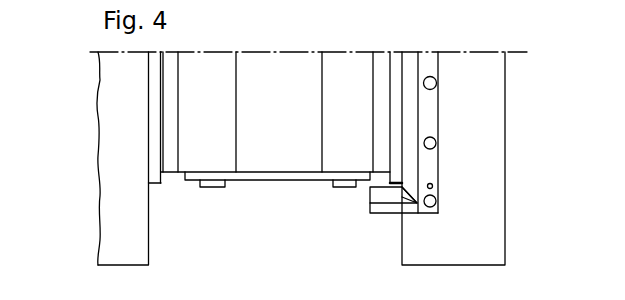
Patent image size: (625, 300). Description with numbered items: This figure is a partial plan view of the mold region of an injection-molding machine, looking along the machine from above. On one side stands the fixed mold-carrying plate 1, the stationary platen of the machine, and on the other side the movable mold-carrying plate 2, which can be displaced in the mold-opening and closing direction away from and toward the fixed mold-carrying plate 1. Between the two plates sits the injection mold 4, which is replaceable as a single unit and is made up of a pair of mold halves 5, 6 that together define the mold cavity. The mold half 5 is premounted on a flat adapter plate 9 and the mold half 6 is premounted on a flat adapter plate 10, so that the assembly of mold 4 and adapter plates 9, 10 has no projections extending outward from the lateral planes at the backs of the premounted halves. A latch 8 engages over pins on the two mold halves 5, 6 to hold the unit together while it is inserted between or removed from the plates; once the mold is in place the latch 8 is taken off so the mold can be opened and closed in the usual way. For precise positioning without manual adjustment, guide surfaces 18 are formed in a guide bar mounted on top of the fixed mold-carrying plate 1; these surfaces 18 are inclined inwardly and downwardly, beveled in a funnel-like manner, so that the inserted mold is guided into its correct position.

The fixed mold-carrying plate 1 is at (488, 132).
The movable mold-carrying plate 2 is at (113, 210).
The injection mold 4 is at (289, 157).
The mold half 5 is at (377, 157).
The mold half 6 is at (243, 160).
The latch 8 is at (258, 180).
The flat adapter plate 9 is at (395, 67).
The flat adapter plate 10 is at (155, 82).
The guide surfaces 18 is at (410, 181).